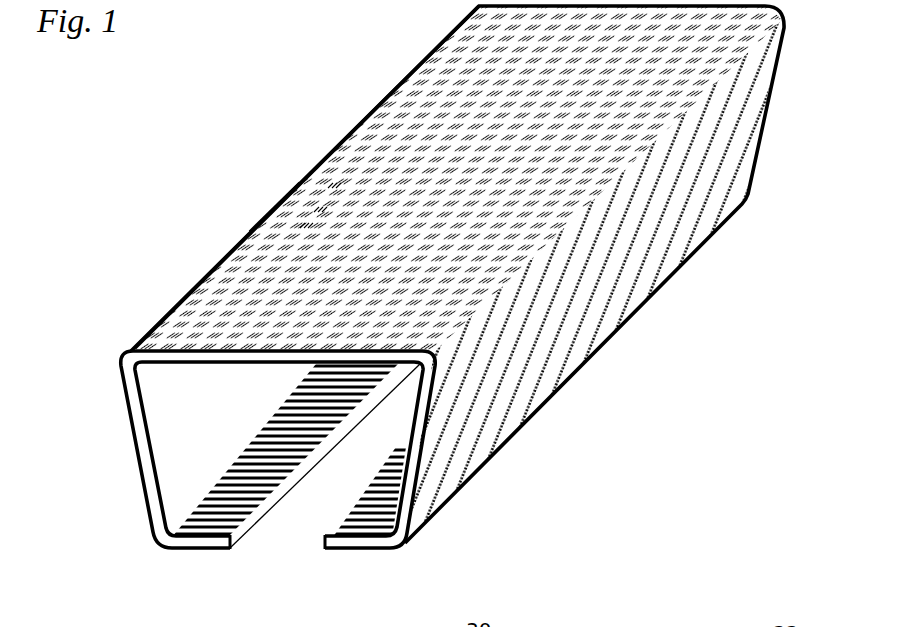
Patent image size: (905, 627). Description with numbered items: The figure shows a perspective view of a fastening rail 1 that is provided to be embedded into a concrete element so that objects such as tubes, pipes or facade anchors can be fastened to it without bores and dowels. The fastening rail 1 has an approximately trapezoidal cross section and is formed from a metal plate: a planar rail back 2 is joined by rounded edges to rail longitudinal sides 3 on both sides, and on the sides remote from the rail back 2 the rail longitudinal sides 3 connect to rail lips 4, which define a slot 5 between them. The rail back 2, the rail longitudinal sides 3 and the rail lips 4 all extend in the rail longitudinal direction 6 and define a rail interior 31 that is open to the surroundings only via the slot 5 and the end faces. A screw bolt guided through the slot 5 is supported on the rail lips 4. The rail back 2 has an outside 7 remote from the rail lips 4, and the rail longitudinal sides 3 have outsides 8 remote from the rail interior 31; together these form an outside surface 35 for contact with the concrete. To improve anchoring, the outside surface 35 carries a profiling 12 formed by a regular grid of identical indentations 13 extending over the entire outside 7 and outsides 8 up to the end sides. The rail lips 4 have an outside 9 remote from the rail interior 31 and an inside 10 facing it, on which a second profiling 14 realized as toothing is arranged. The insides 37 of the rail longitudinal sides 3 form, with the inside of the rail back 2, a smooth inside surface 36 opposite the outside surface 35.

The fastening rail 1 is at (197, 162).
The rail back 2 is at (360, 167).
The rail longitudinal sides 3 is at (124, 398).
The rail lips 4 is at (217, 545).
The slot 5 is at (278, 545).
The rail longitudinal direction 6 is at (185, 551).
The outside of the rail back 7 is at (395, 132).
The outsides of the rail longitudinal sides 8 is at (125, 415).
The outside of the rail lips 9 is at (213, 545).
The inside of the rail lips 10 is at (187, 498).
The profiling 12 is at (258, 268).
The indentations 13 is at (305, 230).
The second profiling 14 is at (233, 471).
The rail interior 31 is at (207, 393).
The outside surface 35 is at (673, 228).
The inside surface 36 is at (162, 410).
The insides of the rail longitudinal sides 37 is at (162, 435).